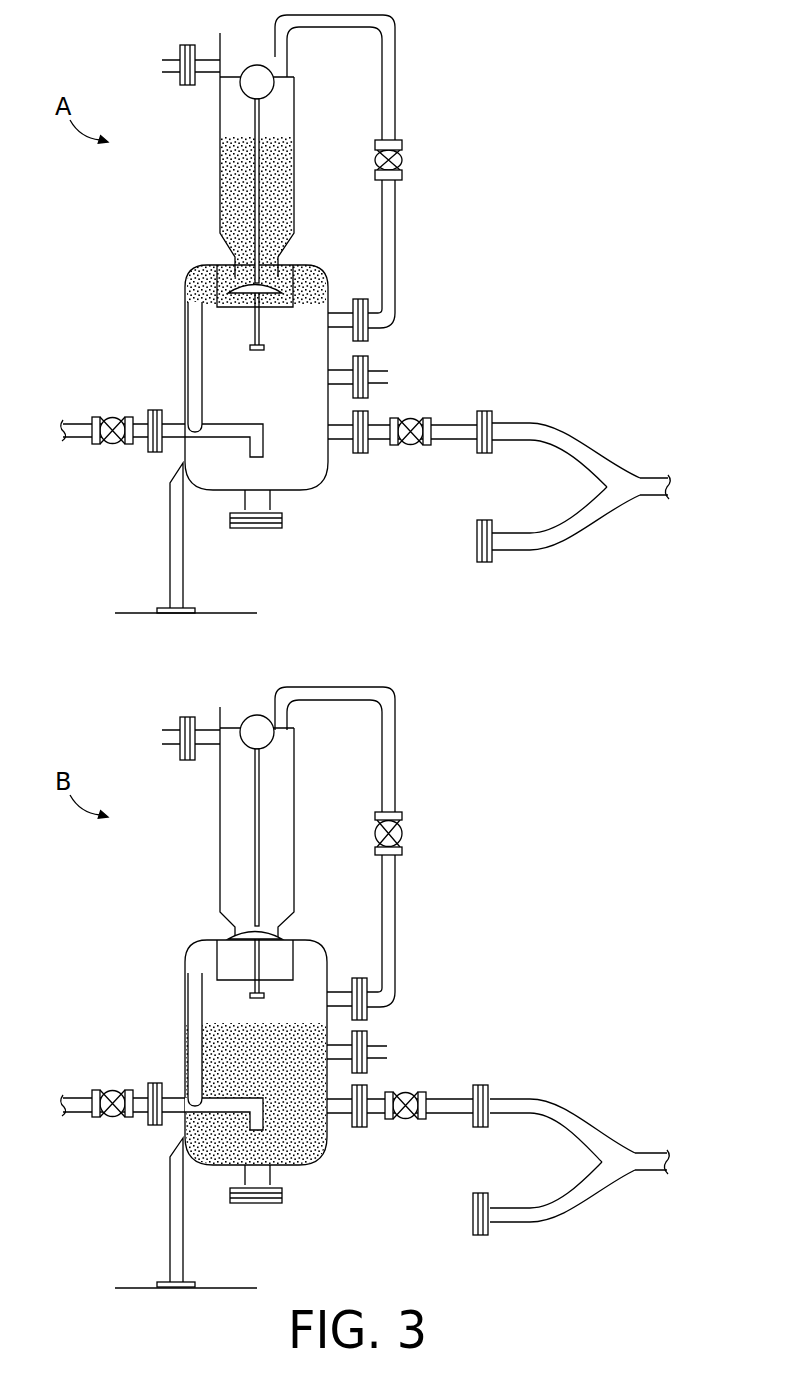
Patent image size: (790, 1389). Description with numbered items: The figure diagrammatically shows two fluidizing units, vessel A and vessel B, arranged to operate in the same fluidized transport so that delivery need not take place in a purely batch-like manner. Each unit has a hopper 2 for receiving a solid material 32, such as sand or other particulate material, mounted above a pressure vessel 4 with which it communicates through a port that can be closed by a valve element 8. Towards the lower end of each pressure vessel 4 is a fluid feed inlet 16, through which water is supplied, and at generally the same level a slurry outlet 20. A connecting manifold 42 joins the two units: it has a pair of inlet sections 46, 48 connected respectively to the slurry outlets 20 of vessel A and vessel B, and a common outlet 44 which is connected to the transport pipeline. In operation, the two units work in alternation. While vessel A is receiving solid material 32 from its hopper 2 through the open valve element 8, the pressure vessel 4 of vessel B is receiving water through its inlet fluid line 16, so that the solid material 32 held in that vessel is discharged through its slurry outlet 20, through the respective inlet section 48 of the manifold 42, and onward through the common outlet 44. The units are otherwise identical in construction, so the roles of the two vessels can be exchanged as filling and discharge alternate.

The hopper 2 is at (220, 120).
The solid material 32 is at (232, 167).
The valve element 8 is at (283, 292).
The pressure vessel 4 is at (185, 340).
The fluid feed inlet 16 is at (73, 424).
The slurry outlet 20 is at (338, 440).
The connecting manifold 42 is at (571, 815).
The common outlet 44 is at (648, 478).
The inlet section 46 is at (514, 421).
The inlet section 48 is at (518, 552).